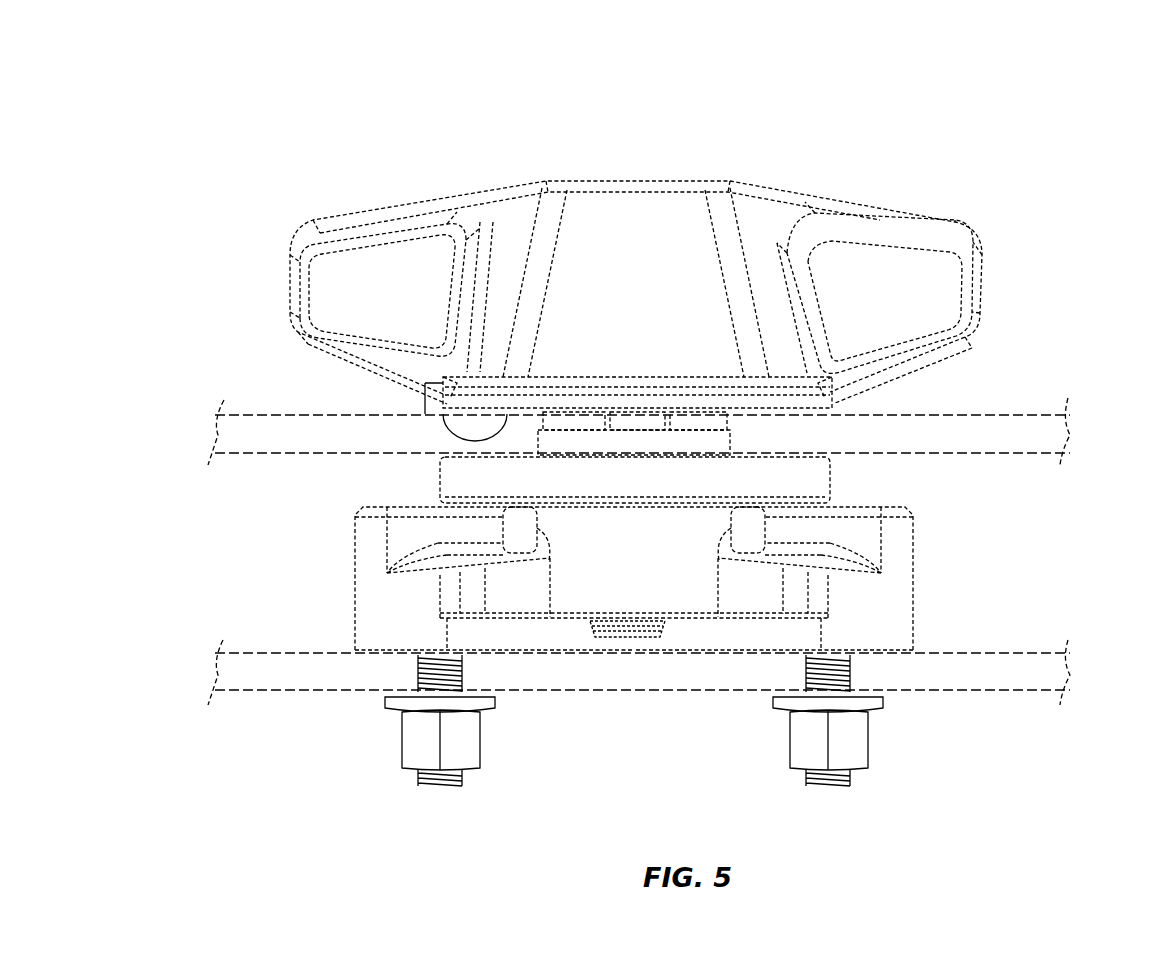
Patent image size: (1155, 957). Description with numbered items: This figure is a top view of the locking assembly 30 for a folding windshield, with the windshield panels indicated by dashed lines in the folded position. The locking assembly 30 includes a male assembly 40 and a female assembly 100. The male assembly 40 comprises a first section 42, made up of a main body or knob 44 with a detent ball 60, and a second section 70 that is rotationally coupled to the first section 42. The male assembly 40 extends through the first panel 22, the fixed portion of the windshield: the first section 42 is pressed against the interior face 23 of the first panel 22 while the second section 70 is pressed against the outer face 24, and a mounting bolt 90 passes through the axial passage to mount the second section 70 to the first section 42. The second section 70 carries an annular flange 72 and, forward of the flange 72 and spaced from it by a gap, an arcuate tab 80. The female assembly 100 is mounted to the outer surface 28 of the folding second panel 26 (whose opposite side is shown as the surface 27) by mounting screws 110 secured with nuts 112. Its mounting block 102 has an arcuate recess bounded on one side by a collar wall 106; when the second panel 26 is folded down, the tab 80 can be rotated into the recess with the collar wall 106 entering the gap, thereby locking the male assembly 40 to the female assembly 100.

The locking assembly 30 is at (400, 104).
The male assembly 40 is at (752, 176).
The first section 42 is at (1014, 262).
The main body (knob) 44 is at (645, 215).
The detent ball 60 is at (470, 430).
The first panel 22 is at (983, 432).
The interior face 23 is at (280, 413).
The outer face 24 is at (300, 453).
The annular flange 72 is at (805, 478).
The female assembly 100 is at (940, 569).
The mounting block 102 is at (898, 545).
The collar wall 106 is at (805, 530).
The tab 80 is at (762, 595).
The second section 70 is at (672, 585).
The mounting bolt 90 is at (640, 638).
The second panel 26 is at (988, 652).
The inner surface of second panel 27 is at (300, 692).
The outer surface 28 is at (278, 652).
The mounting screws 110 is at (836, 780).
The nuts 112 is at (850, 740).